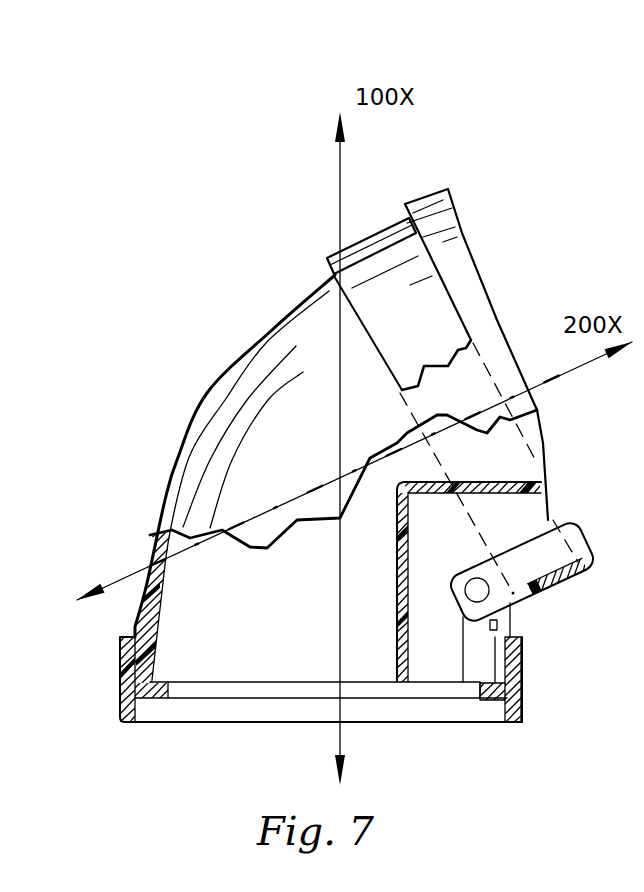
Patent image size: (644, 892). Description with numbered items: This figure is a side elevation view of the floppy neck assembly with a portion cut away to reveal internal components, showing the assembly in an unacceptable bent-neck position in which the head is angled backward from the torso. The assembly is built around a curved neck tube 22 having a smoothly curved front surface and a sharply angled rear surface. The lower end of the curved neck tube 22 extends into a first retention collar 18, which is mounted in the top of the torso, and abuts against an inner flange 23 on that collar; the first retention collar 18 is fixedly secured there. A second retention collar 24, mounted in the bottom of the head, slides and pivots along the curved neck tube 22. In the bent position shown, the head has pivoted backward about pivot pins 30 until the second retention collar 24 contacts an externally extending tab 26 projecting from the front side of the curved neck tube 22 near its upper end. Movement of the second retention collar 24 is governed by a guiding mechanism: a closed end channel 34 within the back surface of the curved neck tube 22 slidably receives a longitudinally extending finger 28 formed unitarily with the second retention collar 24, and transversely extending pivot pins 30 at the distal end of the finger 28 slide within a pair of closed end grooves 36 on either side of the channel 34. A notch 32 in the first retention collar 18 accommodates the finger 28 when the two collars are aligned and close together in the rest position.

The first retention collar 18 is at (122, 688).
The curved neck tube 22 is at (272, 328).
The inner flange 23 is at (155, 698).
The second retention collar 24 is at (370, 233).
The externally extending tab 26 is at (428, 193).
The finger 28 is at (537, 567).
The pivot pins 30 is at (480, 593).
The notch 32 is at (497, 665).
The closed end channel 34 is at (462, 534).
The grooves 36 is at (477, 647).